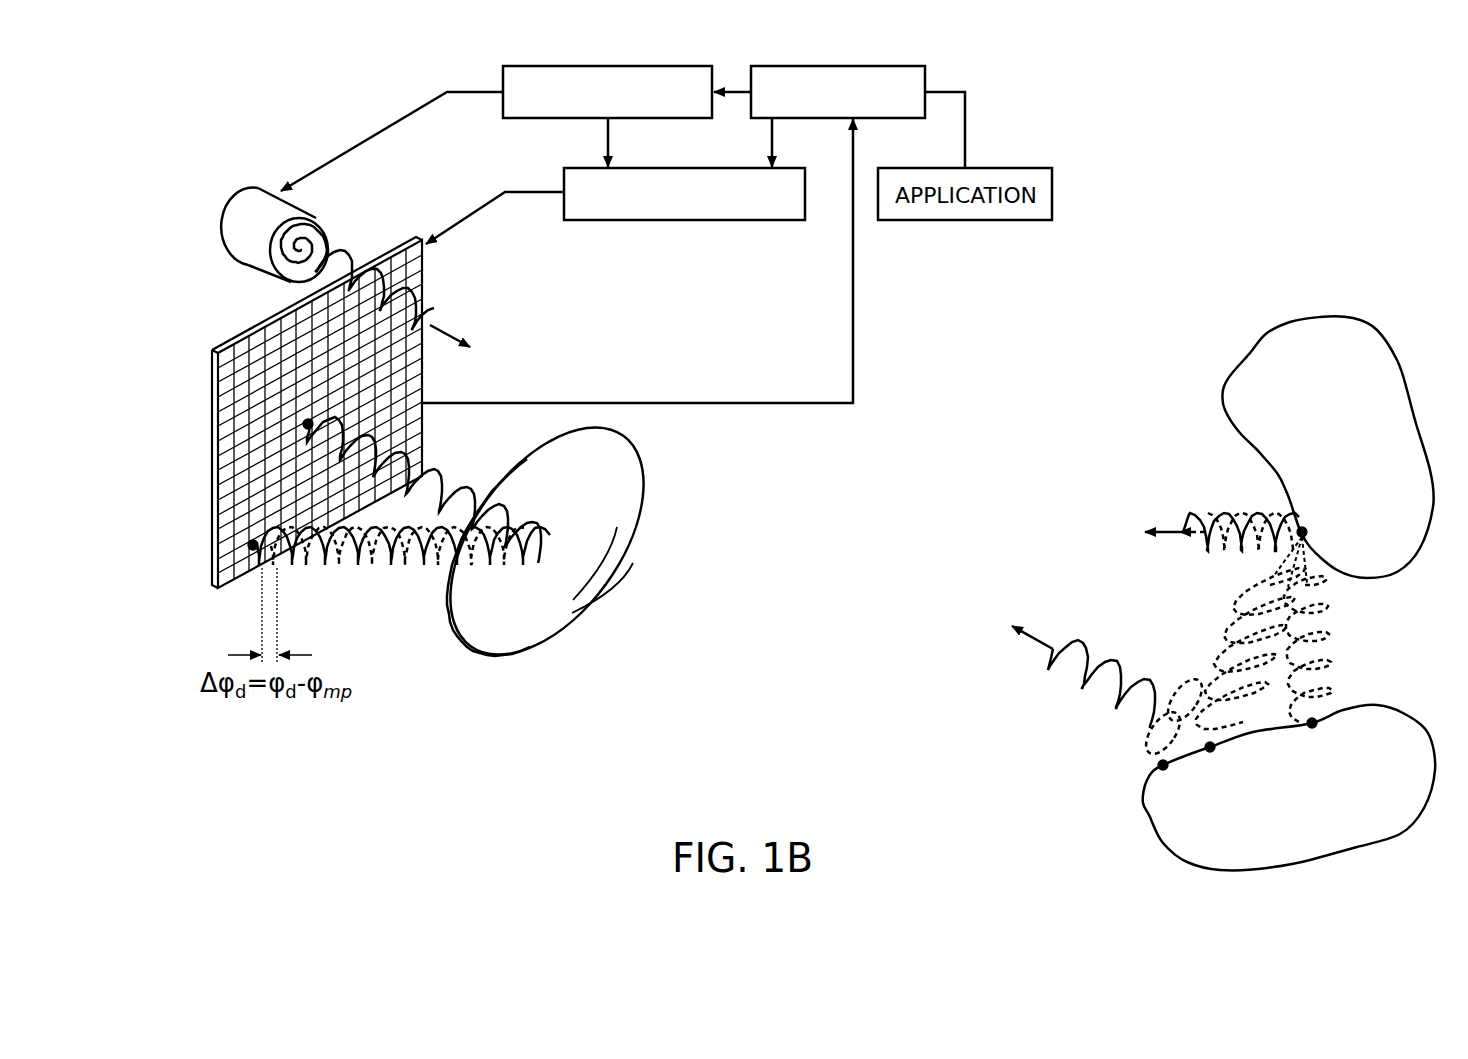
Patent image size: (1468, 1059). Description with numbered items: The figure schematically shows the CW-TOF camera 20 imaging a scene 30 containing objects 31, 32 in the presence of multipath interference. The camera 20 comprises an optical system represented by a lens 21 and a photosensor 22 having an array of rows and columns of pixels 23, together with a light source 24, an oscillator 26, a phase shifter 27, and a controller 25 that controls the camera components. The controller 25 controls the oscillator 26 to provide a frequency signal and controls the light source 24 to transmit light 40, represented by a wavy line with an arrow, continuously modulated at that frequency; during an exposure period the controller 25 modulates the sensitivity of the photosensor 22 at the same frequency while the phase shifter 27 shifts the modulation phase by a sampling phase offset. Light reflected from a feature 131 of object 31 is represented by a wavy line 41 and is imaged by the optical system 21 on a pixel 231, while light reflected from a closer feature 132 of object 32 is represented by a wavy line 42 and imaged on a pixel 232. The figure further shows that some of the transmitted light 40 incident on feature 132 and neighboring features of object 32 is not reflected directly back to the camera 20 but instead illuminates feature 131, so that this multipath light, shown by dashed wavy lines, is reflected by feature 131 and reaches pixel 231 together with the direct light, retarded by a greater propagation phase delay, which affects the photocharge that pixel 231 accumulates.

The CW-TOF camera 20 is at (153, 160).
The lens 21 is at (548, 648).
The photosensor 22 is at (153, 491).
The pixels 23 is at (222, 362).
The light source 24 is at (252, 186).
The controller 25 is at (790, 66).
The oscillator 26 is at (603, 66).
The phase shifter 27 is at (562, 178).
The scene 30 is at (1336, 277).
The object 31 is at (1359, 451).
The object 32 is at (1401, 752).
The transmitted light 40 is at (430, 325).
The reflected light 41 is at (377, 568).
The reflected light 42 is at (452, 483).
The feature 131 is at (1310, 532).
The feature 132 is at (1210, 750).
The pixel 231 is at (213, 566).
The pixel 232 is at (306, 425).